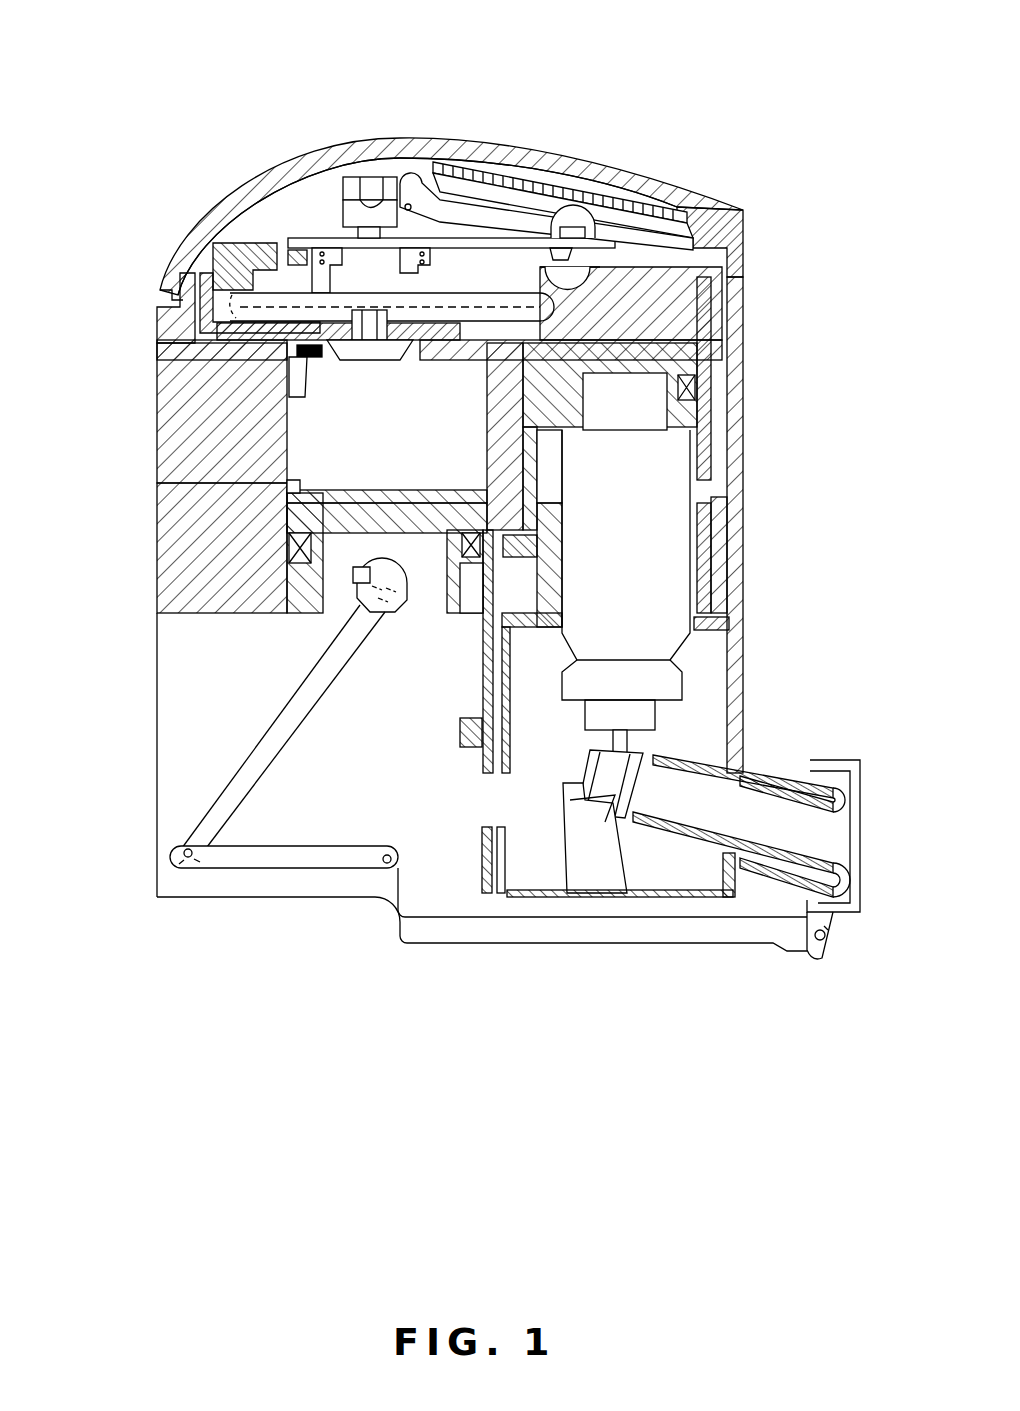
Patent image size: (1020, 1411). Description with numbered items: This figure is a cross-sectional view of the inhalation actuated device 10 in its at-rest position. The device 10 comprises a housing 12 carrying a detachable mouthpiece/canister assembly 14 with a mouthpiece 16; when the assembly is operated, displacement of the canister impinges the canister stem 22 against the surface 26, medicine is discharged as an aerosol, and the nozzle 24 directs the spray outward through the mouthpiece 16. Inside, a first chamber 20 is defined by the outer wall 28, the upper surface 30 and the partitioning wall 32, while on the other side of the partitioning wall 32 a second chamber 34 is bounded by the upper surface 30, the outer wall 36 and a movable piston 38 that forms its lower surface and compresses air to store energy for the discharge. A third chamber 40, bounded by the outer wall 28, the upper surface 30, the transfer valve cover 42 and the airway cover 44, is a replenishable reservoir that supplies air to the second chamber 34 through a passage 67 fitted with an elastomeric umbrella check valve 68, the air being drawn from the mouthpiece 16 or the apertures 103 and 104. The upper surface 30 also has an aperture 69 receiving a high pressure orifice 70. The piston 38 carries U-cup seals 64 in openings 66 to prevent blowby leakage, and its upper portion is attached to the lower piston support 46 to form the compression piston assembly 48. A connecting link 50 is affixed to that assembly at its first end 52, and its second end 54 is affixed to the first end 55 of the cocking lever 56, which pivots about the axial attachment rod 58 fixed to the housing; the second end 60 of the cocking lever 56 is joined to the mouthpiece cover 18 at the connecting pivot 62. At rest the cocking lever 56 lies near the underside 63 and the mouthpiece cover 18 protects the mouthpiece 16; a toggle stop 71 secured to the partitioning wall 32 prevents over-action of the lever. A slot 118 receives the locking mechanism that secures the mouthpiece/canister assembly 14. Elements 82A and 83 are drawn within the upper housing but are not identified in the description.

The inhalation actuated device 10 is at (803, 110).
The housing 12 is at (737, 342).
The mouthpiece/canister assembly 14 is at (745, 617).
The mouthpiece 16 is at (783, 762).
The mouthpiece cover 18 is at (850, 760).
The first chamber 20 is at (540, 470).
The canister stem 22 is at (630, 743).
The nozzle 24 is at (552, 883).
The surface 26 is at (628, 883).
The outer wall 28 is at (706, 401).
The upper surface 30 is at (700, 262).
The partitioning wall 32 is at (480, 880).
The second chamber 34 is at (298, 437).
The outer wall 36 is at (156, 405).
The movable piston 38 is at (300, 482).
The third chamber 40 is at (735, 212).
The transfer valve cover 42 is at (237, 237).
The airway cover 44 is at (213, 193).
The lower piston support 46 is at (350, 580).
The compression piston assembly 48 is at (302, 578).
The connecting link 50 is at (205, 784).
The first end 52 is at (403, 618).
The second end 54 is at (178, 862).
The first end 55 is at (172, 852).
The cocking lever 56 is at (235, 875).
The axial attachment rod 58 is at (372, 880).
The second end 60 is at (800, 951).
The connecting pivot 62 is at (818, 940).
The underside 63 is at (265, 900).
The U-cup seals 64 is at (317, 517).
The openings 66 is at (337, 500).
The passage 67 is at (162, 318).
The umbrella check valve 68 is at (293, 397).
The aperture 69 is at (412, 352).
The high pressure orifice 70 is at (360, 360).
The toggle stop 71 is at (462, 730).
The actuator block 82A is at (388, 192).
The cam lever 83 is at (510, 230).
The aperture 103 is at (507, 752).
The aperture 104 is at (487, 758).
The slot 118 is at (505, 570).